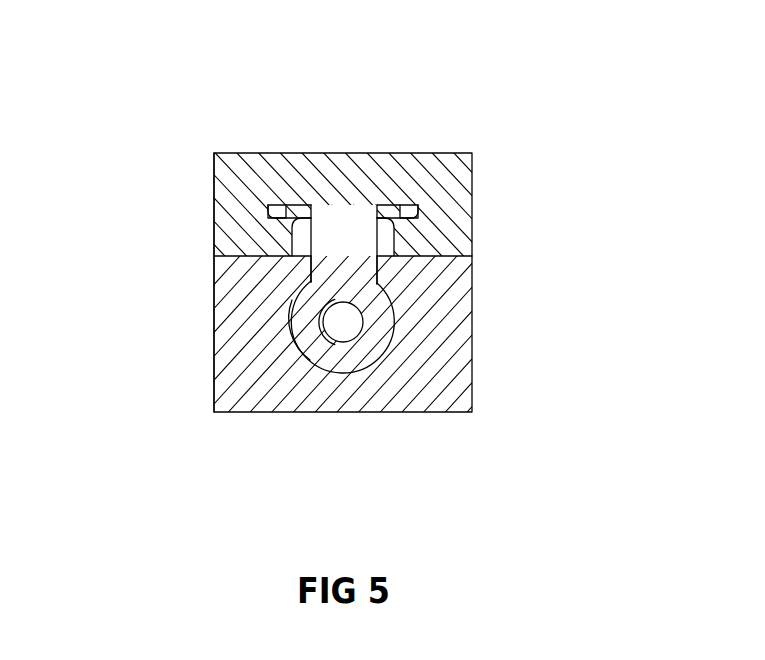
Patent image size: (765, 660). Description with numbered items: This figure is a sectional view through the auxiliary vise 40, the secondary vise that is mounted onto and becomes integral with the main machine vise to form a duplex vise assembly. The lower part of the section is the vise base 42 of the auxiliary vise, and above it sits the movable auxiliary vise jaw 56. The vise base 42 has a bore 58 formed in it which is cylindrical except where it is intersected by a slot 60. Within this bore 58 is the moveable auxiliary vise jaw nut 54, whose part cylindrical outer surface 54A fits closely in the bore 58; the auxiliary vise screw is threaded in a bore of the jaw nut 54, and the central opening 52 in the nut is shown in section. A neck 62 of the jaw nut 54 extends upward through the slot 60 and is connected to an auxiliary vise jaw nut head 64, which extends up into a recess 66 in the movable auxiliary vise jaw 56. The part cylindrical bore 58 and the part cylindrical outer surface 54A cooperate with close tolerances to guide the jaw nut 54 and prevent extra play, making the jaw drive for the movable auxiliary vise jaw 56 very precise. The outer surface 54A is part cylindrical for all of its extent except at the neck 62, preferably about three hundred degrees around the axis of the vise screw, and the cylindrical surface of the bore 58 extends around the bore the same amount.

The auxiliary vise 40 is at (190, 359).
The vise base 42 is at (440, 393).
The bore 52 is at (353, 326).
The moveable auxiliary vise jaw nut 54 is at (322, 358).
The part cylindrical outer surface 54A is at (302, 352).
The movable auxiliary vise jaw 56 is at (427, 166).
The bore 58 is at (385, 345).
The slot 60 is at (327, 283).
The neck 62 is at (365, 263).
The auxiliary vise jaw nut head 64 is at (347, 225).
The recess 66 is at (392, 208).